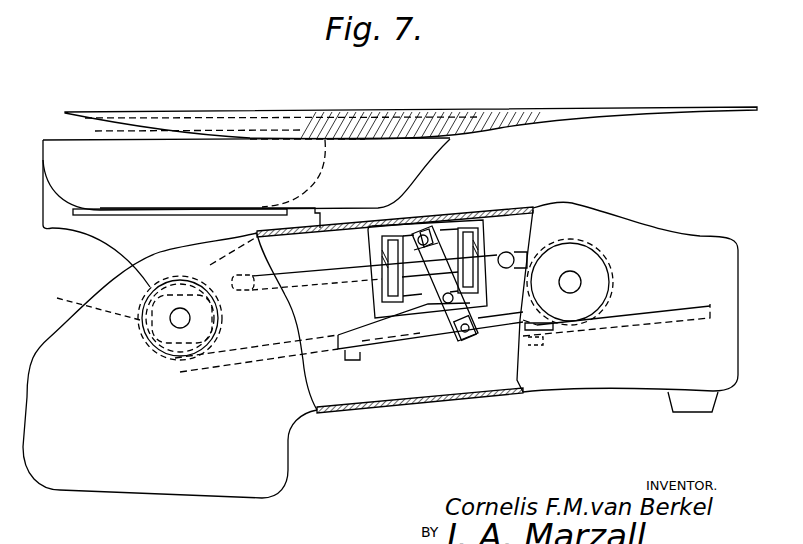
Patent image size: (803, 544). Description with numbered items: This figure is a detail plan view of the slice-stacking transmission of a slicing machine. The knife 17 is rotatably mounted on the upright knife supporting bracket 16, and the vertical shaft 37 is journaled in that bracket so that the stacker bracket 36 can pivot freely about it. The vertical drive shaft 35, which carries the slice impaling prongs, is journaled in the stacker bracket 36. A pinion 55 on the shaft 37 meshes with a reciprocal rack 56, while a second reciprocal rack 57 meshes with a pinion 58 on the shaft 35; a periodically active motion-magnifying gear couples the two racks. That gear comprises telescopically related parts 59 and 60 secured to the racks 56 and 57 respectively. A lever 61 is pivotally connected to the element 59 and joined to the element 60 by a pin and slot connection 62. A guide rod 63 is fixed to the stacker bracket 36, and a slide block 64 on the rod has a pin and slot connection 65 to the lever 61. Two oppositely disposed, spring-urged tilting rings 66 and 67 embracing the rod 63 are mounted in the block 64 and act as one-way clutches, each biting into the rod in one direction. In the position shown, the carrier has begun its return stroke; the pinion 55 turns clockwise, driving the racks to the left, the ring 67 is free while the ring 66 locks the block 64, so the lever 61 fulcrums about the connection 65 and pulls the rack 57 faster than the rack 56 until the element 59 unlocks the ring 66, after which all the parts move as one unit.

The knife supporting bracket 16 is at (72, 150).
The knife 17 is at (128, 115).
The vertical drive shaft 35 is at (571, 272).
The stacker bracket 36 is at (132, 480).
The vertical shaft 37 is at (178, 318).
The pinion 55 is at (84, 303).
The reciprocal rack 56 is at (213, 343).
The second reciprocal rack 57 is at (633, 323).
The pinion 58 is at (607, 253).
The telescopic element 59 is at (347, 343).
The telescopic element 60 is at (499, 390).
The lever 61 is at (432, 232).
The pin and slot connection 62 is at (466, 346).
The guide rod 63 is at (322, 280).
The slide block 64 is at (373, 240).
The pin and slot connection 65 is at (422, 234).
The tilting ring 66 is at (398, 295).
The tilting ring 67 is at (481, 228).